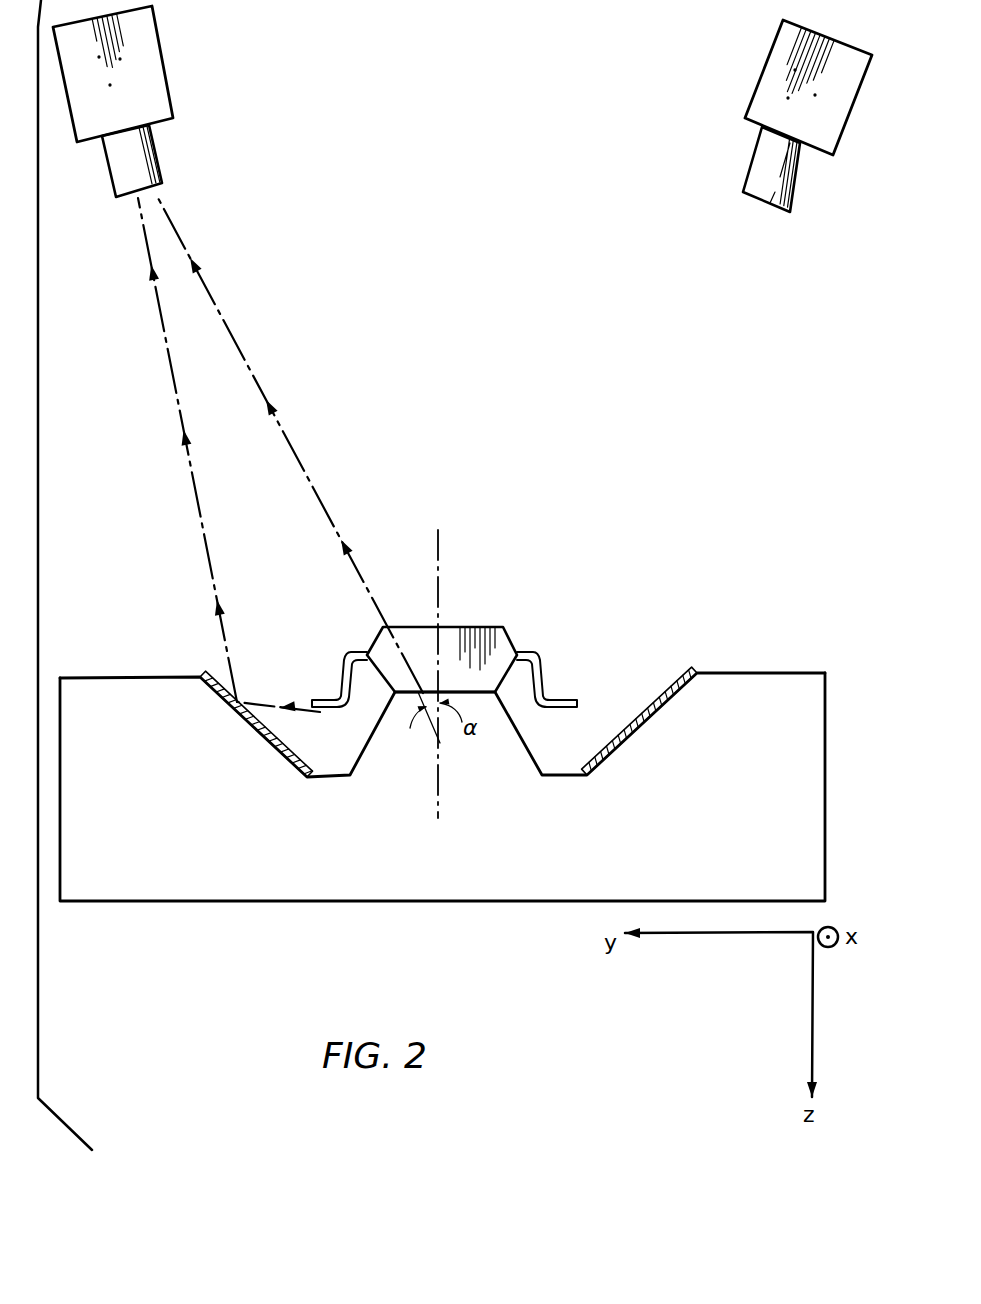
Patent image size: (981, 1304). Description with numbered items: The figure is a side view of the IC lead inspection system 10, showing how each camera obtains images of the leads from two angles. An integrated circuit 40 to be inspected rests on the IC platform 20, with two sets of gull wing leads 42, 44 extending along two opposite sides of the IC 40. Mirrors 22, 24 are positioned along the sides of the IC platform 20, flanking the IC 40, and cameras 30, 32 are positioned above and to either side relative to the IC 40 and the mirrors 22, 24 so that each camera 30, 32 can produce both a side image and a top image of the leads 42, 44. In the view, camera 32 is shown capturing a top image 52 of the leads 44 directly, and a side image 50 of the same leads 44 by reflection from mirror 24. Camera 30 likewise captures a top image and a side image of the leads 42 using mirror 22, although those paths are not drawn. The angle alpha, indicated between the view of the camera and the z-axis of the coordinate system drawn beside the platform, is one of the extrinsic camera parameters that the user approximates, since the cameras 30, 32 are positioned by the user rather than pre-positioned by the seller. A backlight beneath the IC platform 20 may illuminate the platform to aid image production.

The IC lead inspection system 10 is at (251, 923).
The IC platform 20 is at (513, 737).
The mirror 22 is at (662, 713).
The mirror 24 is at (247, 730).
The camera 30 is at (762, 68).
The camera 32 is at (168, 75).
The integrated circuit 40 is at (497, 627).
The leads 42 is at (577, 702).
The leads 44 is at (323, 708).
The side image 50 is at (178, 390).
The top image 52 is at (313, 480).